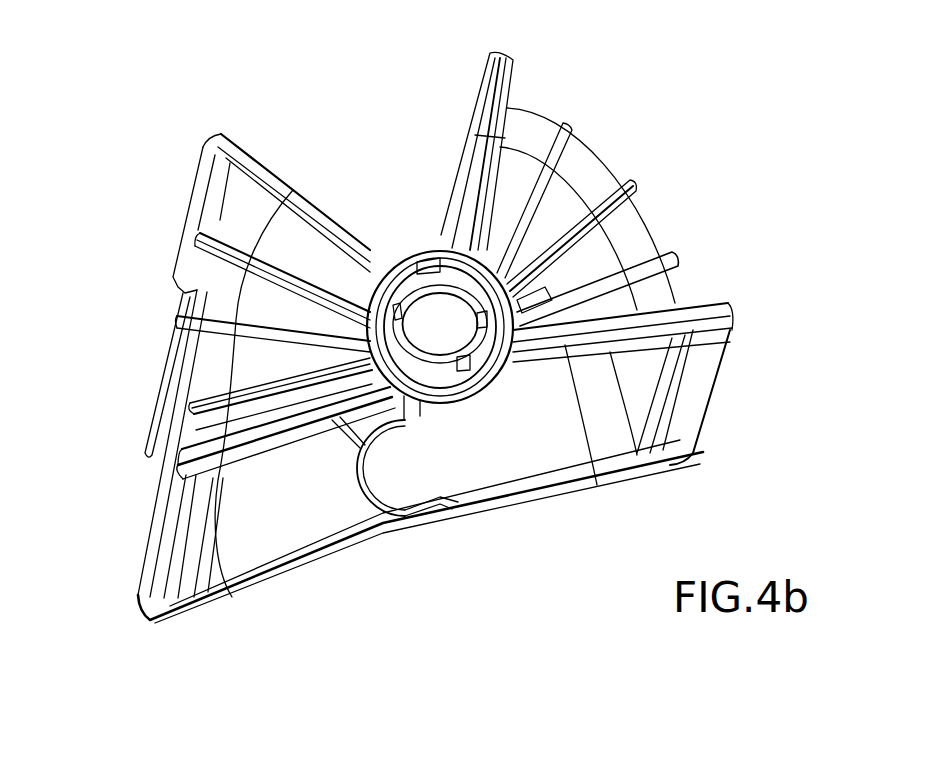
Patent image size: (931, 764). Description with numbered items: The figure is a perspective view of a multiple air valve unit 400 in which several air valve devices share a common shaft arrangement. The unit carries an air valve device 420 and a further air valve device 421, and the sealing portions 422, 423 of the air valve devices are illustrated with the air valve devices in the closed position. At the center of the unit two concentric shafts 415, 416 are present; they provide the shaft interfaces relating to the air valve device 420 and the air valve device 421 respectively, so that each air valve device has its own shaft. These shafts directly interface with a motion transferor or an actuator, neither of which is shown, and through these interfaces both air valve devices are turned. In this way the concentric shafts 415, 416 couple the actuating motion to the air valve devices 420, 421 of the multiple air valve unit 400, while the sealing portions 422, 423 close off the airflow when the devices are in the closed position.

The multiple air valve unit 400 is at (683, 135).
The concentric shaft 415 is at (437, 350).
The concentric shaft 416 is at (393, 338).
The air valve device 420 is at (157, 387).
The air valve device 421 is at (652, 224).
The sealing portion 422 is at (180, 245).
The sealing portion 423 is at (500, 60).